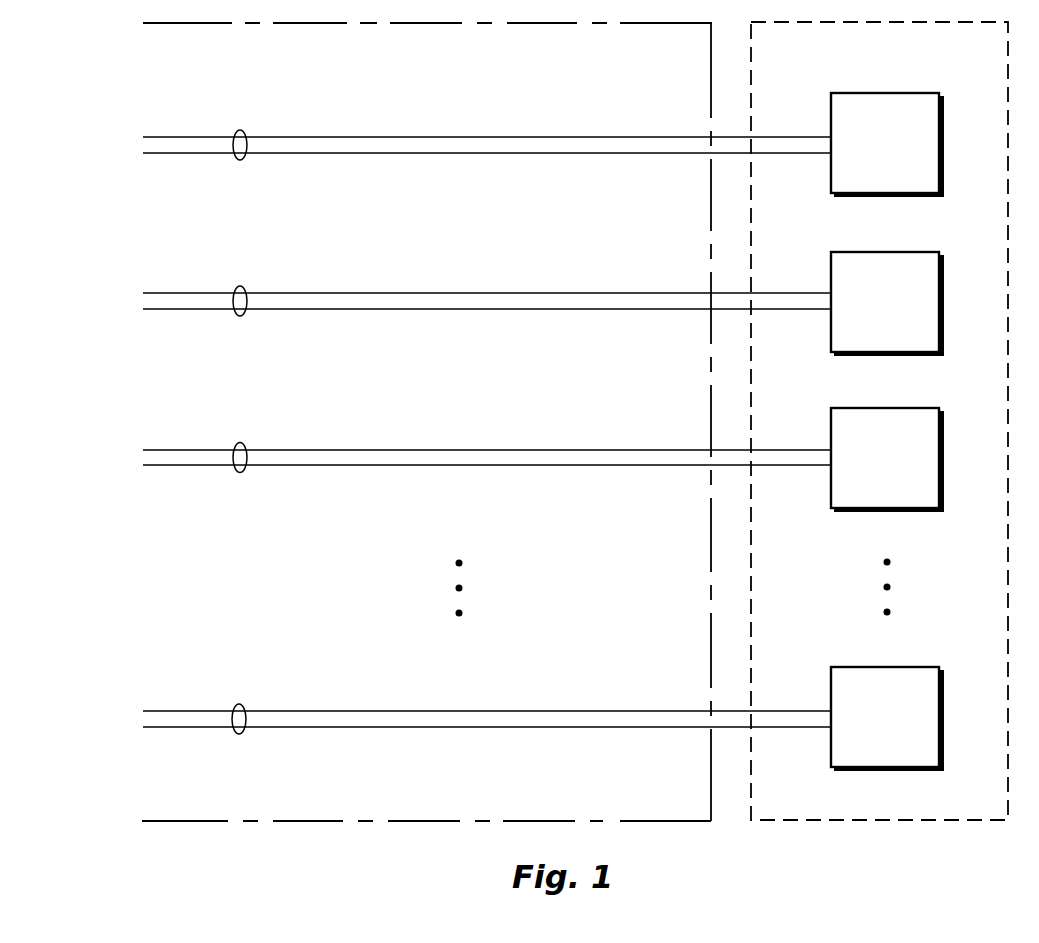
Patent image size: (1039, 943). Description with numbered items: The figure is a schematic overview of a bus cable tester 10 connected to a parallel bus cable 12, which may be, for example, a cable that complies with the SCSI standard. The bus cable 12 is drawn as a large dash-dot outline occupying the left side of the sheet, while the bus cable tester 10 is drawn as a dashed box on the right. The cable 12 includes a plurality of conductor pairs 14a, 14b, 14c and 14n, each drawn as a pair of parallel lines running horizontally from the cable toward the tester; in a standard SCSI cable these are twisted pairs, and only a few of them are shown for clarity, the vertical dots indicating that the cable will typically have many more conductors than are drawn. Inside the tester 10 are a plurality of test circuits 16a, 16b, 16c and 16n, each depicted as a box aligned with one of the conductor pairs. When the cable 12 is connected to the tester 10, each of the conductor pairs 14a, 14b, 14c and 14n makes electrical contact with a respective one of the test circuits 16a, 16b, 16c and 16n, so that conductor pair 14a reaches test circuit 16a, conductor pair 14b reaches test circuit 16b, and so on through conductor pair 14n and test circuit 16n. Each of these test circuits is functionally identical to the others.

The bus cable tester 10 is at (843, 821).
The bus cable 12 is at (312, 821).
The conductor pair 14a is at (242, 131).
The conductor pair 14b is at (242, 287).
The conductor pair 14c is at (242, 443).
The conductor pair 14n is at (241, 705).
The test circuit 16a is at (901, 93).
The test circuit 16b is at (901, 252).
The test circuit 16c is at (901, 408).
The test circuit 16n is at (901, 667).